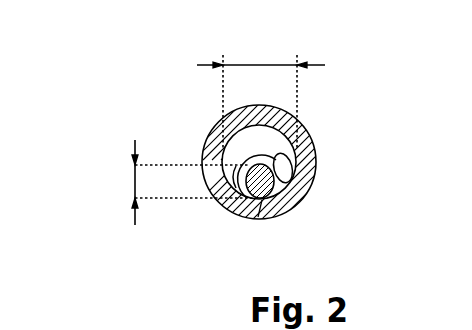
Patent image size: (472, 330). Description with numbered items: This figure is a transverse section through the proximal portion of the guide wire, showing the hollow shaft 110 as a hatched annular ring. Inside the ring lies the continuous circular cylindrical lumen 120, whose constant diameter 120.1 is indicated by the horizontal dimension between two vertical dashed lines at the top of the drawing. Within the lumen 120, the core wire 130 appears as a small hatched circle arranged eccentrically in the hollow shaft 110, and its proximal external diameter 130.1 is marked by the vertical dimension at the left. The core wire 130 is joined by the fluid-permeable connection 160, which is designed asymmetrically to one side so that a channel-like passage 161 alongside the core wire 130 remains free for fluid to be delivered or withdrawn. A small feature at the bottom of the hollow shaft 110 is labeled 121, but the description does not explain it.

The hollow shaft 110 is at (226, 210).
The lumen 120 is at (272, 143).
The diameter of the lumen 120.1 is at (317, 65).
The slot 121 is at (258, 217).
The core wire 130 is at (282, 178).
The proximal external diameter 130.1 is at (135, 223).
The fluid-permeable connection 160 is at (284, 166).
The channel-like passage 161 is at (242, 147).